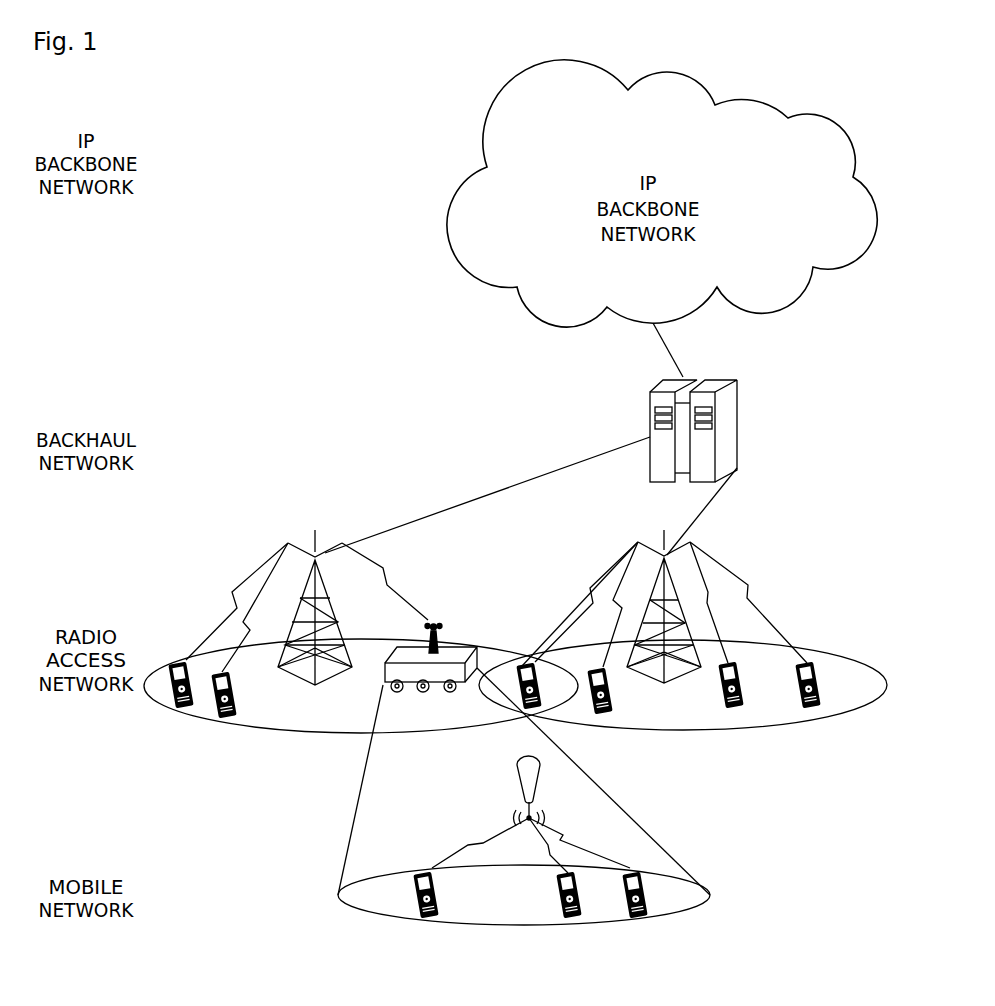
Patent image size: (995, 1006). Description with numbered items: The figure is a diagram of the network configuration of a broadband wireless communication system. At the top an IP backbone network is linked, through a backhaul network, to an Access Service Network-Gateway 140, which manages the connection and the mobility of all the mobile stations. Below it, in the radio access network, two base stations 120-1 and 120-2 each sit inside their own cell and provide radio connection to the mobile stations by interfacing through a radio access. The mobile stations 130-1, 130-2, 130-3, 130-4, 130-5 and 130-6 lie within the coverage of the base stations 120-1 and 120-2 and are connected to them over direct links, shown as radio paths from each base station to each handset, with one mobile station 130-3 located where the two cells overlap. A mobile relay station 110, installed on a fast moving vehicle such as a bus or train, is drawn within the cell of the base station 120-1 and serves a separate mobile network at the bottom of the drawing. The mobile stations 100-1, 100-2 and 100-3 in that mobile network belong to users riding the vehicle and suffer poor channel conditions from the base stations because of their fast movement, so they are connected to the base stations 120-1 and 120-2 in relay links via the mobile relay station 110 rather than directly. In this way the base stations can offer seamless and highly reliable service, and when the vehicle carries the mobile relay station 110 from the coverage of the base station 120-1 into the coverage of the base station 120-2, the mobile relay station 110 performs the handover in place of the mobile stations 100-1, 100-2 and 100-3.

The Access Service Network-Gateway (ASN-GW) 140 is at (737, 397).
The base station (BS) 120-1 is at (338, 618).
The base station (BS) 120-2 is at (681, 612).
The mobile relay station (MRS) 110 is at (431, 685).
The mobile station (MS) 130-1 is at (171, 709).
The mobile station (MS) 130-2 is at (242, 716).
The mobile station (MS) 130-3 is at (539, 709).
The mobile station (MS) 130-4 is at (621, 712).
The mobile station (MS) 130-5 is at (745, 709).
The mobile station (MS) 130-6 is at (825, 709).
The mobile station (MS) 100-1 is at (572, 918).
The mobile station (MS) 100-2 is at (417, 918).
The mobile station (MS) 100-3 is at (647, 918).